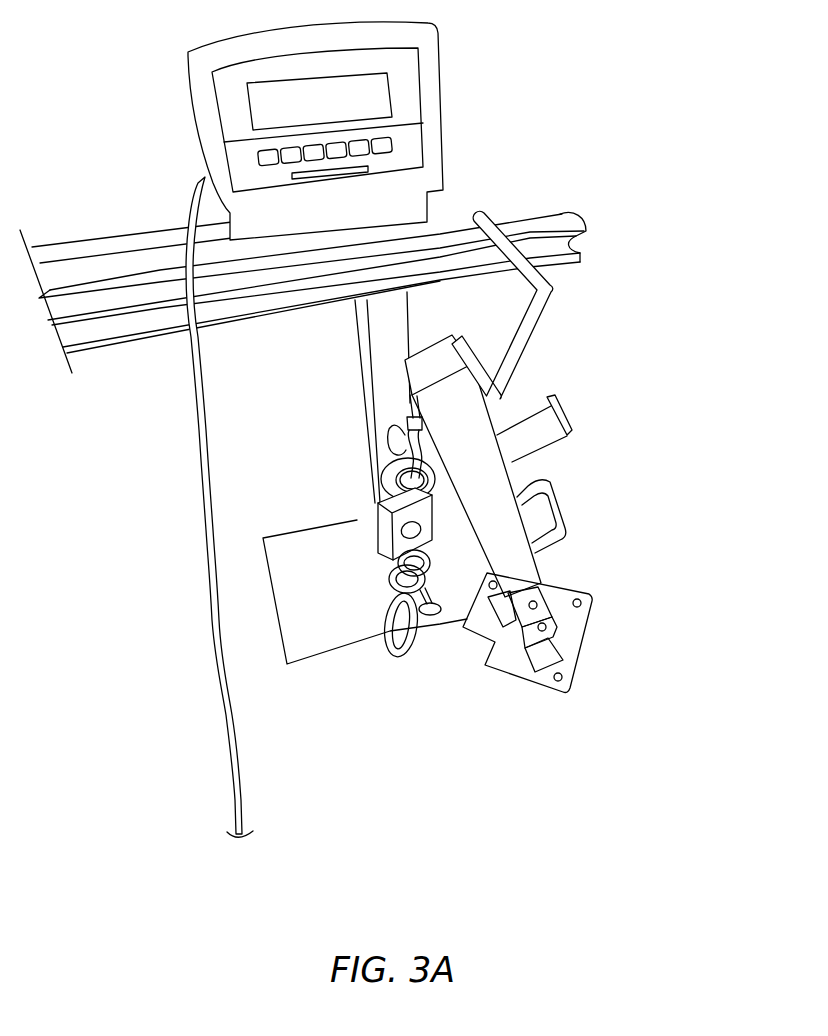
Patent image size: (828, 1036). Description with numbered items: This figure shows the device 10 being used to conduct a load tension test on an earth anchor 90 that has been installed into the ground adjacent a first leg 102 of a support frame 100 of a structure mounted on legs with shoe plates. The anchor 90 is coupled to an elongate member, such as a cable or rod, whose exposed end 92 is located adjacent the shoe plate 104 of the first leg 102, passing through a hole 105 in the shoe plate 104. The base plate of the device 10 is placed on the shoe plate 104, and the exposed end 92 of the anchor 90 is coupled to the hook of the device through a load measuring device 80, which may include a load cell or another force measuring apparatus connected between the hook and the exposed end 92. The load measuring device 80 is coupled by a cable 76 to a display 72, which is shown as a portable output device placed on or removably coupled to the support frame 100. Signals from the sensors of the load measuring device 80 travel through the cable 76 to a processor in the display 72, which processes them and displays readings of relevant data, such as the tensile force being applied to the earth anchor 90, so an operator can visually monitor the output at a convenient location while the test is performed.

The device 10 is at (613, 445).
The display 72 is at (447, 73).
The cable 76 is at (196, 403).
The load measuring device 80 is at (376, 530).
The earth anchor 90 is at (441, 626).
The exposed end 92 is at (432, 604).
The support frame 100 is at (582, 213).
The first leg 102 is at (407, 320).
The shoe plate 104 is at (328, 640).
The hole 105 is at (428, 620).